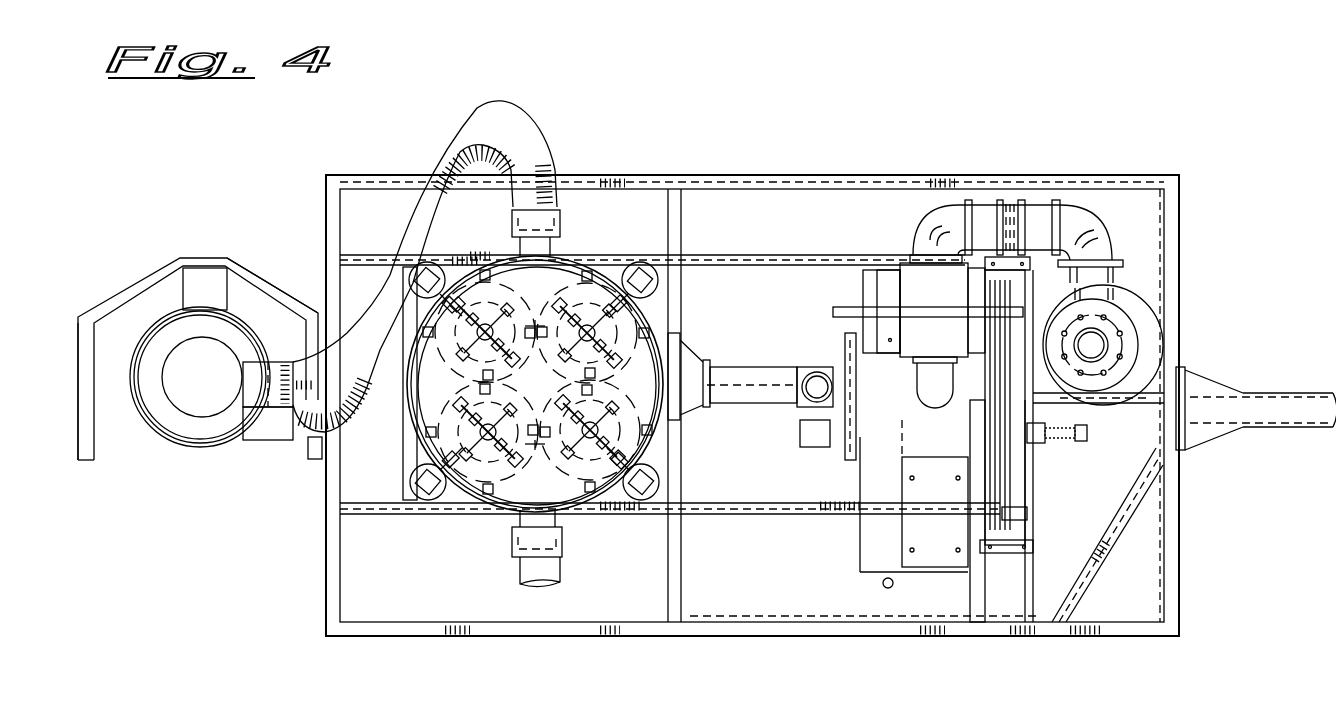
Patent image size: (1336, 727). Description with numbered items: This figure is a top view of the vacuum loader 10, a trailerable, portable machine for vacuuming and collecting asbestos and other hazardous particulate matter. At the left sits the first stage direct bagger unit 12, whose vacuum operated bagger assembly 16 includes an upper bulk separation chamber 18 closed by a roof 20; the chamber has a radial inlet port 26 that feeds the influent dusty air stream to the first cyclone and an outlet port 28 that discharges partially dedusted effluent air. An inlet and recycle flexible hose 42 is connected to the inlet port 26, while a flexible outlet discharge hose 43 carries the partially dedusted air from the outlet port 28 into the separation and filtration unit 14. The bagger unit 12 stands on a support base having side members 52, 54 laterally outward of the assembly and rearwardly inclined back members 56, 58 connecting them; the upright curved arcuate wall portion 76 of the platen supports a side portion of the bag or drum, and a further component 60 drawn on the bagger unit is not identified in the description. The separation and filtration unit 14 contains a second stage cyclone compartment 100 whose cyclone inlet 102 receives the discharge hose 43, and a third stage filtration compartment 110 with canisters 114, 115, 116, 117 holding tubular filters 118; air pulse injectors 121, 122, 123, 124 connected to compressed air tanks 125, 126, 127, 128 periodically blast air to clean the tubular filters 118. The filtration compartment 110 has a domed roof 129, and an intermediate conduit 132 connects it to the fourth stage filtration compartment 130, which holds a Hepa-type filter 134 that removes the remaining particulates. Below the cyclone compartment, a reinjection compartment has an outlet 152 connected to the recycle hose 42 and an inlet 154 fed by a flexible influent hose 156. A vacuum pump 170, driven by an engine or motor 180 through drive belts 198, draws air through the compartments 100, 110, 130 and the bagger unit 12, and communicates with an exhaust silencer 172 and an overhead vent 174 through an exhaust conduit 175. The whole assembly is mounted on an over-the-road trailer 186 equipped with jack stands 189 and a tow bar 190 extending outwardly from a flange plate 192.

The vacuum loader 10 is at (292, 560).
The direct bagger unit 12 is at (224, 346).
The separation and filtration unit 14 is at (704, 163).
The vacuum operated bagger assembly 16 is at (210, 418).
The upper bulk separation chamber 18 is at (173, 433).
The roof 20 is at (187, 379).
The radial inlet port 26 is at (270, 441).
The outlet port 28 is at (248, 363).
The inlet and recycle flexible hose 42 is at (322, 410).
The flexible outlet discharge hose 43 is at (360, 318).
The side member 52 is at (78, 444).
The side member 54 is at (312, 459).
The rearwardly inclined back member 56 is at (147, 278).
The rearwardly inclined back member 58 is at (262, 280).
The support block 60 is at (228, 290).
The upright curved arcuate wall portion 76 is at (171, 326).
The second stage cyclone compartment 100 is at (406, 425).
The cyclone inlet 102 is at (400, 278).
The third stage filtration compartment 110 is at (664, 318).
The canister 114 is at (498, 302).
The canister 115 is at (604, 378).
The canister 116 is at (508, 470).
The canister 117 is at (470, 384).
The tubular filters 118 is at (541, 385).
The air pulse injector 121 is at (458, 272).
The air pulse injector 122 is at (630, 272).
The air pulse injector 123 is at (646, 503).
The air pulse injector 124 is at (430, 502).
The compressed air tank 125 is at (432, 263).
The compressed air tank 126 is at (641, 262).
The compressed air tank 127 is at (663, 487).
The compressed air tank 128 is at (456, 494).
The domed roof 129 is at (663, 455).
The fourth stage filtration compartment 130 is at (842, 475).
The intermediate conduit 132 is at (738, 370).
The Hepa-type filter 134 is at (933, 458).
The outlet 152 is at (555, 250).
The inlet 154 is at (563, 535).
The flexible influent hose 156 is at (520, 575).
The vacuum pump 170 is at (918, 290).
The exhaust silencer 172 is at (1114, 326).
The overhead vent 174 is at (1105, 347).
The exhaust conduit 175 is at (982, 205).
The engine or motor 180 is at (930, 572).
The over-the-road trailer 186 is at (638, 637).
The jack stands 189 is at (1145, 637).
The tow bar 190 is at (1265, 391).
The flange plate 192 is at (1186, 447).
The drive belts 198 is at (1002, 497).